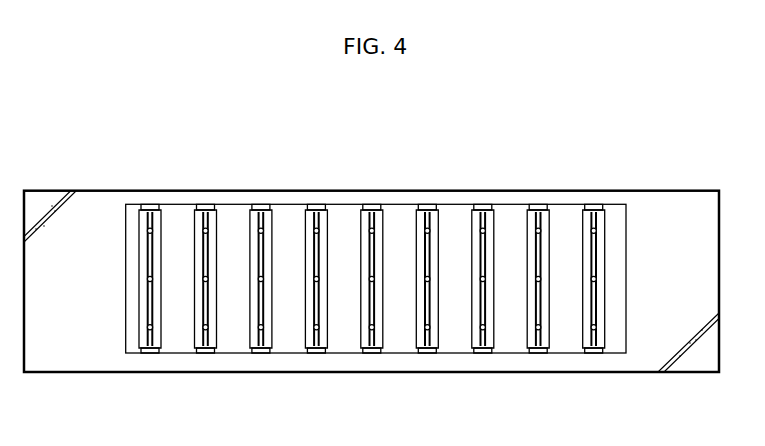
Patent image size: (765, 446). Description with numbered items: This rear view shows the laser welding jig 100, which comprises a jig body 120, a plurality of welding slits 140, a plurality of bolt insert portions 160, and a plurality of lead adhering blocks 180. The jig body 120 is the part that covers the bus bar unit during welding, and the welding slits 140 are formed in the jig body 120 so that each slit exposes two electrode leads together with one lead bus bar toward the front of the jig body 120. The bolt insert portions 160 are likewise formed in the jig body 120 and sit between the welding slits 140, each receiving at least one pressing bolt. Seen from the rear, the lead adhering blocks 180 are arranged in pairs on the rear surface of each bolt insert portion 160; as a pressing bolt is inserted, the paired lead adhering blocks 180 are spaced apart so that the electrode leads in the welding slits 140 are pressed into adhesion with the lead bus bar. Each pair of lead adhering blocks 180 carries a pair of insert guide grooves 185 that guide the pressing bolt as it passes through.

The laser welding jig 100 is at (121, 142).
The jig body 120 is at (450, 190).
The welding slit 140 is at (232, 354).
The bolt insert portion 160 is at (205, 354).
The lead adhering block 180 is at (212, 212).
The insert guide groove 185 is at (204, 228).